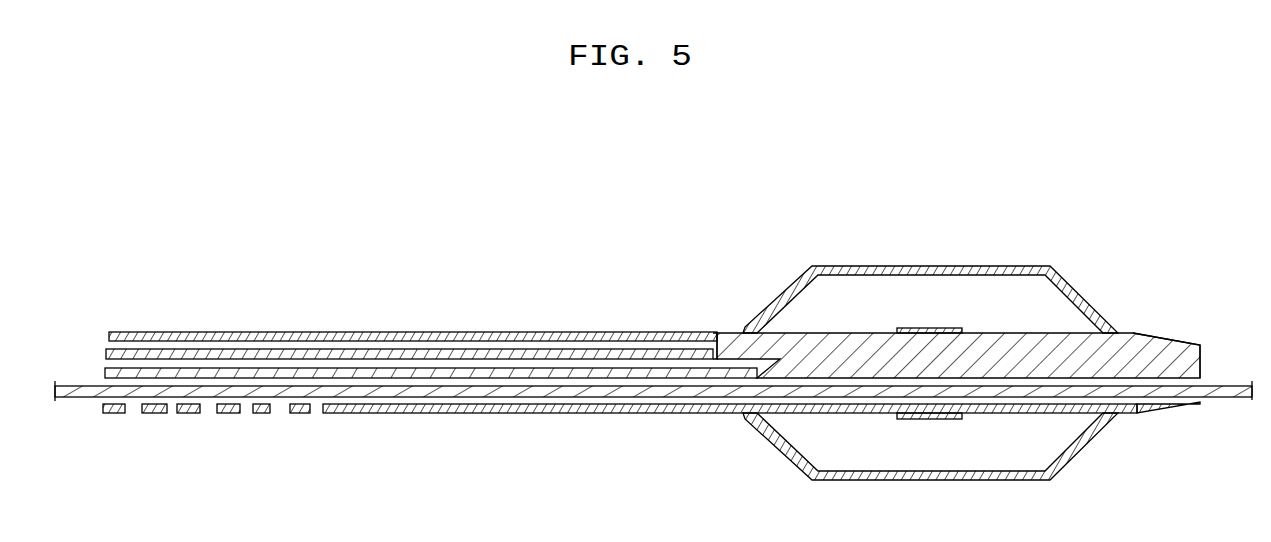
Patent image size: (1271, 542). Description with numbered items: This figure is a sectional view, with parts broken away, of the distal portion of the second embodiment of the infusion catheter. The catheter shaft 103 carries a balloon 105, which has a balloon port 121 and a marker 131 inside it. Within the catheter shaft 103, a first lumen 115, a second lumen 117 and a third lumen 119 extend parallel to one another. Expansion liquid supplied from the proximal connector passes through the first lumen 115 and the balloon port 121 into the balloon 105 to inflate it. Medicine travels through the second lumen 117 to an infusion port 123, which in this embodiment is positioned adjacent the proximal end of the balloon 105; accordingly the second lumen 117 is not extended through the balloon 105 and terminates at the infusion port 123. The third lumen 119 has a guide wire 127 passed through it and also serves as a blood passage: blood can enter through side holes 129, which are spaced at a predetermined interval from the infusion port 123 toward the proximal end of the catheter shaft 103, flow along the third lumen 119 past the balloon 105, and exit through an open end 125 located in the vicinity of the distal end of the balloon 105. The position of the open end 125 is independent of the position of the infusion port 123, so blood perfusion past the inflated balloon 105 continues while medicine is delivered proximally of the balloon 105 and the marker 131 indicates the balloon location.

The catheter shaft 103 is at (1132, 338).
The balloon 105 is at (1037, 265).
The first lumen 115 is at (107, 357).
The second lumen 117 is at (110, 335).
The third lumen 119 is at (107, 376).
The balloon port 121 is at (780, 345).
The infusion port 123 is at (716, 333).
The open end 125 is at (1185, 401).
The guide wire 127 is at (95, 395).
The side holes 129 is at (281, 408).
The marker 131 is at (942, 327).